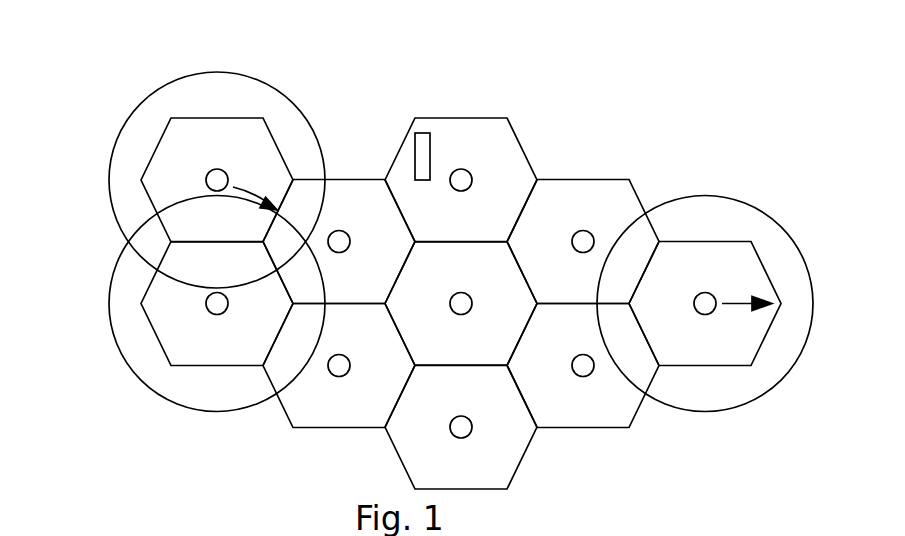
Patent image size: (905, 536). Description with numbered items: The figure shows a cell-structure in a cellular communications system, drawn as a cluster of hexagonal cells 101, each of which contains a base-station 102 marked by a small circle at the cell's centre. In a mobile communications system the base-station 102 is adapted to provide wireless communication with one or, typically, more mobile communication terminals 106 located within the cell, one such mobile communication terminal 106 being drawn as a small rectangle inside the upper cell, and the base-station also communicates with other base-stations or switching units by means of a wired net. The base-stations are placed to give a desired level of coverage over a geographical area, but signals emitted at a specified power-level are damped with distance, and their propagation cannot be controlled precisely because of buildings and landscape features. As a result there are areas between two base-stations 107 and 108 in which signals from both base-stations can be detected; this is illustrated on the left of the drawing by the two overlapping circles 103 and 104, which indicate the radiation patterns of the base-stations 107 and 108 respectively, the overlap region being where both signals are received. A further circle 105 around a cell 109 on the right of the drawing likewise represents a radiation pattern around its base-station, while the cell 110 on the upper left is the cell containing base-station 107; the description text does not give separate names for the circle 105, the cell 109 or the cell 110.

The cell 101 is at (492, 115).
The base-station 102 is at (466, 178).
The circle 103 is at (265, 83).
The circle 104 is at (172, 400).
The coverage area of base station 105 is at (752, 210).
The mobile communication terminal 106 is at (430, 143).
The base-station 107 is at (207, 185).
The base-station 108 is at (210, 308).
The cell 109 is at (722, 366).
The cell 110 is at (203, 117).